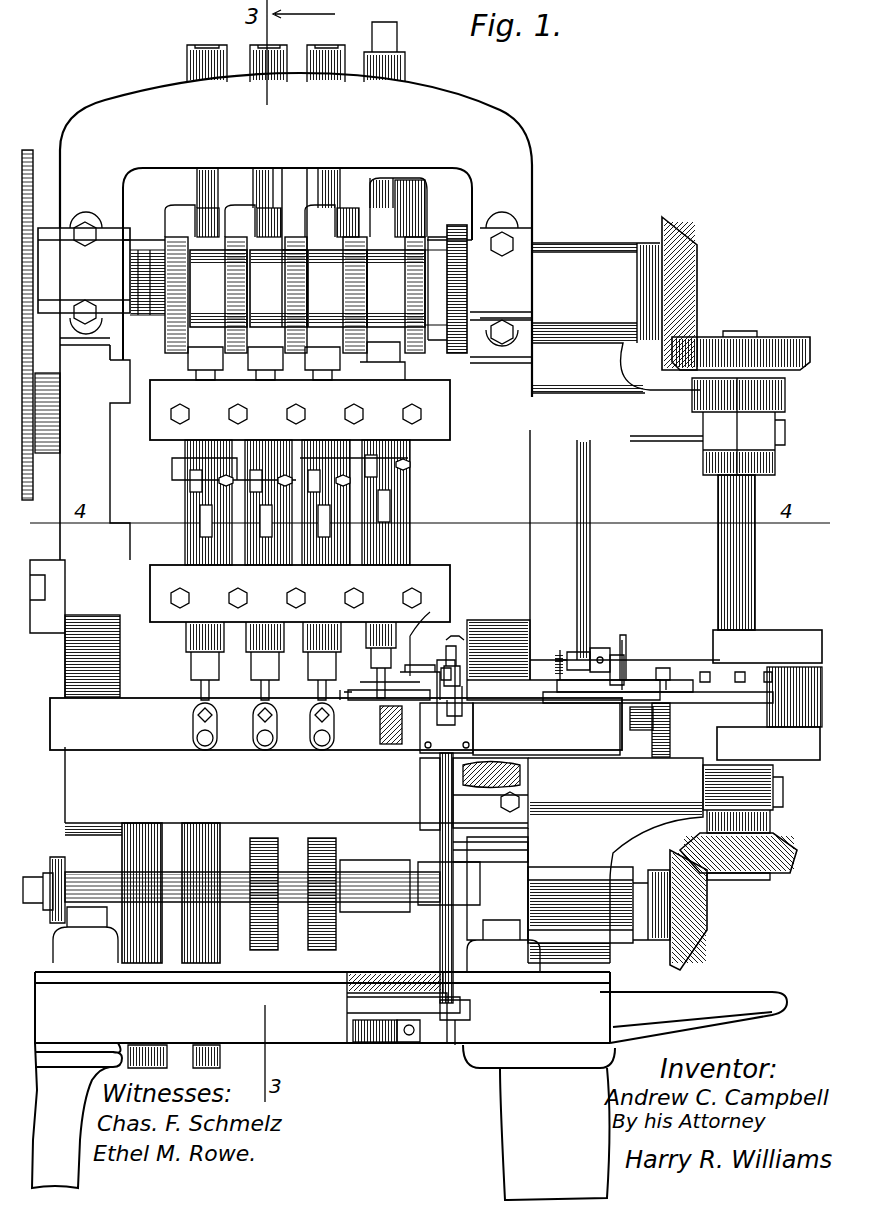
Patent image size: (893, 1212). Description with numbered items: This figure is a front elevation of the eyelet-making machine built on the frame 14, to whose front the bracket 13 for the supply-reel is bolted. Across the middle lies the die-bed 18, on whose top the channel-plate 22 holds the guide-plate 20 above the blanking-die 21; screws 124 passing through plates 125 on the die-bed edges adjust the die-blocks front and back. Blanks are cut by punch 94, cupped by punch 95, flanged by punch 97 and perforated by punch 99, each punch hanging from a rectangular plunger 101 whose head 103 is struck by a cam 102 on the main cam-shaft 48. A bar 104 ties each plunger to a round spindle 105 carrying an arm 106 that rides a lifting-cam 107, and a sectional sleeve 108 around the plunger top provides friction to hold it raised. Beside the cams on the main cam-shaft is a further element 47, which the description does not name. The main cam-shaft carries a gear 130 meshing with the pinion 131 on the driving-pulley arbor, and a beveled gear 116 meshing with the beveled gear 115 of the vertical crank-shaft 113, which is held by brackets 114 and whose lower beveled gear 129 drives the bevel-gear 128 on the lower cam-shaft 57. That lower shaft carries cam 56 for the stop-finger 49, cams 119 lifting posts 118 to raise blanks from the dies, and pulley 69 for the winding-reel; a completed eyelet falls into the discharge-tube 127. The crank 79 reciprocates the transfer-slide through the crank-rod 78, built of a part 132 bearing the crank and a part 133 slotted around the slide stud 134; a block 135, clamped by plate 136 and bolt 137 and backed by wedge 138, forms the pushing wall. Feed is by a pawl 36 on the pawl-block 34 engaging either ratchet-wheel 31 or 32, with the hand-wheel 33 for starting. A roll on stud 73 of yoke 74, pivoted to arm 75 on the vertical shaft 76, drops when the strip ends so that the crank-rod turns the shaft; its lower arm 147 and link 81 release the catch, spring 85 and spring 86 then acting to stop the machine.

The bracket 13 is at (492, 786).
The frame 14 is at (302, 883).
The die-bed 18 is at (336, 724).
The guide-plate 20 is at (372, 700).
The blanking-die 21 is at (378, 728).
The channel-plate 22 is at (356, 688).
The ratchet-wheel 31 is at (666, 671).
The ratchet-wheel 32 is at (622, 655).
The hand-wheel 33 is at (670, 742).
The pawl-block 34 is at (600, 648).
The pawl 36 is at (630, 680).
The gear 47 is at (457, 228).
The main cam-shaft 48 is at (150, 265).
The stop-finger 49 is at (400, 620).
The cam 56 is at (440, 850).
The lower cam-shaft 57 is at (424, 665).
The pulley 69 is at (640, 880).
The stud 73 is at (420, 760).
The yoke 74 is at (533, 688).
The arm 75 is at (468, 716).
The vertical shaft 76 is at (440, 795).
The crank-rod 78 is at (720, 712).
The crank 79 is at (769, 713).
The link 81 is at (352, 1045).
The spring 85 is at (412, 1042).
The spring 86 is at (380, 1045).
The punch 94 is at (378, 658).
The punch 95 is at (318, 697).
The punch 97 is at (260, 695).
The punch 99 is at (198, 692).
The plunger 101 is at (378, 556).
The cam 102 is at (306, 247).
The head 103 is at (385, 362).
The bar 104 is at (208, 518).
The spindle 105 is at (385, 163).
The arm 106 is at (178, 212).
The lifting-cam 107 is at (416, 278).
The sectional sleeve 108 is at (207, 72).
The crank-shaft 113 is at (755, 580).
The brackets 114 is at (656, 629).
The beveled gear 115 is at (749, 343).
The beveled gear 116 is at (690, 293).
The posts 118 is at (265, 840).
The cams 119 is at (262, 942).
The screws 124 is at (313, 716).
The plates 125 is at (209, 748).
The discharge-tube 127 is at (143, 845).
The bevel-gear 128 is at (698, 910).
The beveled gear 129 is at (749, 856).
The gear 130 is at (33, 185).
The pinion 131 is at (36, 375).
The crank-rod part 132 is at (767, 646).
The crank-rod part 133 is at (590, 703).
The stud 134 is at (572, 652).
The block 135 is at (660, 686).
The plate 136 is at (736, 674).
The bolt 137 is at (706, 672).
The wedge 138 is at (688, 718).
The arm 147 is at (440, 1045).